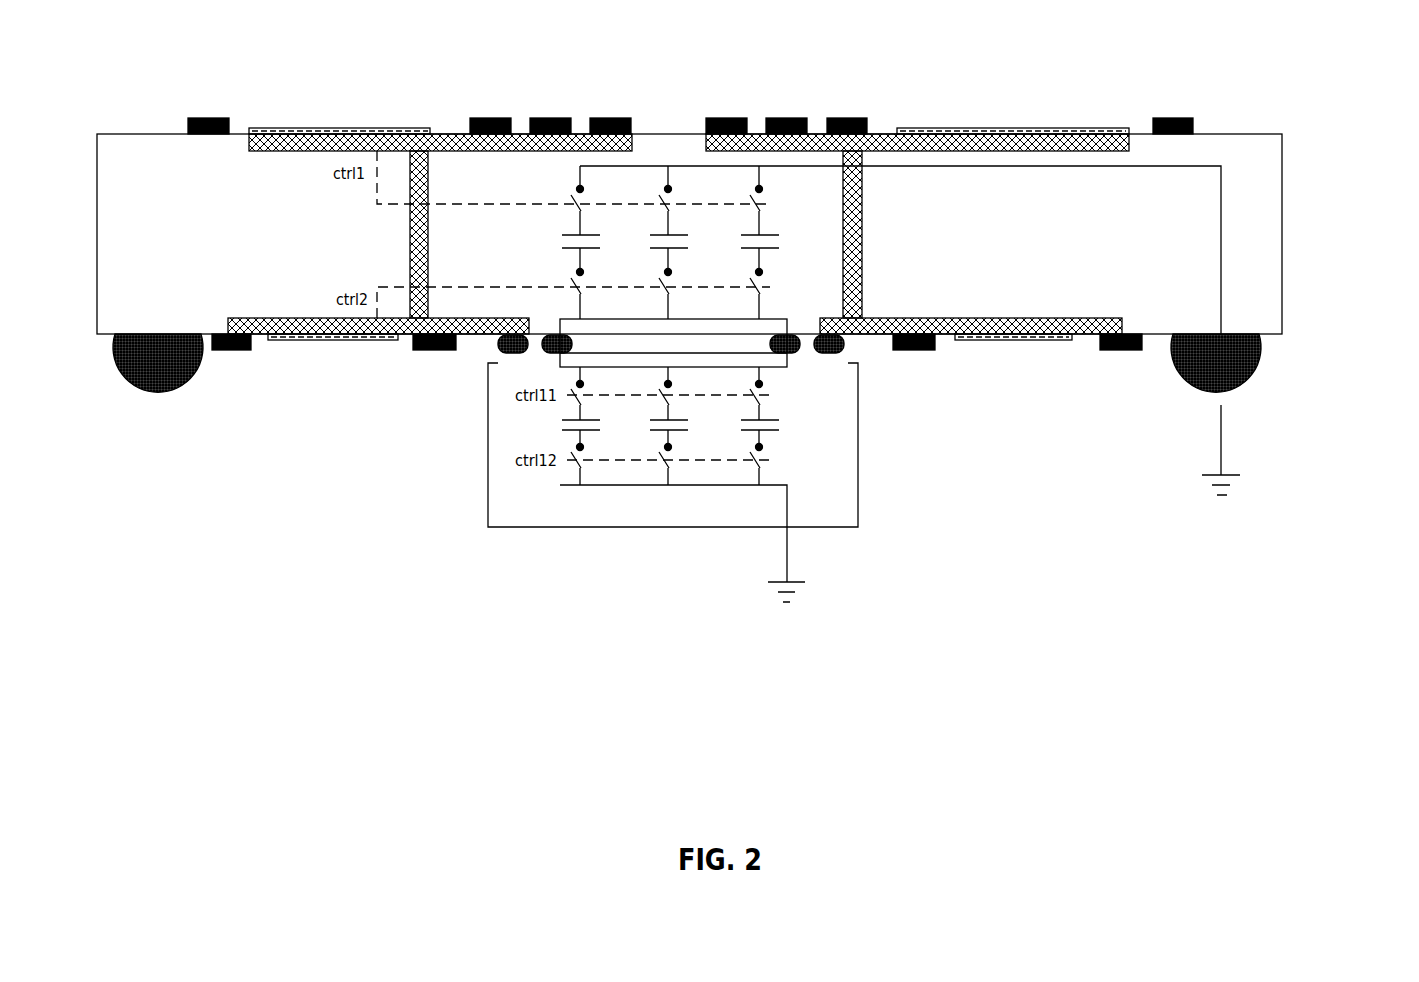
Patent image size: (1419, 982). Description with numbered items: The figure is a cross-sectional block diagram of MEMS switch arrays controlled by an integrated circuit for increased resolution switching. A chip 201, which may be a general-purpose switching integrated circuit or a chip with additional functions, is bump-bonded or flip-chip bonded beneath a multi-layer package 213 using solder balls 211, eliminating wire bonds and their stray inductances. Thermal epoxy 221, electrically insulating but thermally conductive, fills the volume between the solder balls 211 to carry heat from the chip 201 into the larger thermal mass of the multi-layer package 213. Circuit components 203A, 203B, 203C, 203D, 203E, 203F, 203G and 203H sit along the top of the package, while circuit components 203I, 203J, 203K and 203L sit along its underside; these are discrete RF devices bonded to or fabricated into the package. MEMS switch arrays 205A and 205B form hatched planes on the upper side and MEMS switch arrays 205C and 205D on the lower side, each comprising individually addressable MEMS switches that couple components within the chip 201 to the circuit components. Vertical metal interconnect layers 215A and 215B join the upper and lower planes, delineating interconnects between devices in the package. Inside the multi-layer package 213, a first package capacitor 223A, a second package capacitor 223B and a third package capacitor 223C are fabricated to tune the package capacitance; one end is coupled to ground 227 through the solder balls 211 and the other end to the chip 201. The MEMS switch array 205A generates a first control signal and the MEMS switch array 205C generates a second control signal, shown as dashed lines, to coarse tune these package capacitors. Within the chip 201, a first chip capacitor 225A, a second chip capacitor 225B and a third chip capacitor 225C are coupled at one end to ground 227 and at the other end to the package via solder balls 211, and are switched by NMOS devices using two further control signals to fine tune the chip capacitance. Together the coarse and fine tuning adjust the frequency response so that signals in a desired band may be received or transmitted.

The chip 201 is at (720, 515).
The circuit component 203A is at (213, 117).
The circuit component 203B is at (490, 117).
The circuit component 203C is at (555, 117).
The circuit component 203D is at (624, 117).
The circuit component 203E is at (721, 117).
The circuit component 203F is at (788, 117).
The circuit component 203G is at (851, 117).
The circuit component 203H is at (1173, 117).
The circuit component 203I is at (245, 351).
The circuit component 203J is at (418, 351).
The circuit component 203K is at (932, 351).
The circuit component 203L is at (1108, 351).
The MEMS switch array 205A is at (328, 246).
The MEMS switch array 205B is at (960, 236).
The MEMS switch array 205C is at (317, 285).
The MEMS switch array 205D is at (960, 273).
The solder balls 211 is at (525, 359).
The multi-layer package 213 is at (1292, 345).
The metal interconnect layer 215A is at (410, 240).
The metal interconnect layer 215B is at (862, 265).
The thermal epoxy 221 is at (865, 337).
The capacitor C1 223A is at (518, 267).
The capacitor C2 223B is at (650, 267).
The capacitor C3 223C is at (740, 267).
The capacitor C11 225A is at (565, 450).
The capacitor C12 225B is at (655, 450).
The capacitor C13 225C is at (745, 450).
The ground 227 is at (1187, 510).